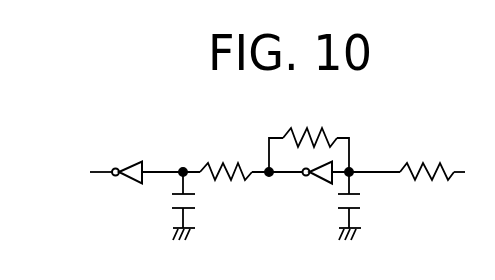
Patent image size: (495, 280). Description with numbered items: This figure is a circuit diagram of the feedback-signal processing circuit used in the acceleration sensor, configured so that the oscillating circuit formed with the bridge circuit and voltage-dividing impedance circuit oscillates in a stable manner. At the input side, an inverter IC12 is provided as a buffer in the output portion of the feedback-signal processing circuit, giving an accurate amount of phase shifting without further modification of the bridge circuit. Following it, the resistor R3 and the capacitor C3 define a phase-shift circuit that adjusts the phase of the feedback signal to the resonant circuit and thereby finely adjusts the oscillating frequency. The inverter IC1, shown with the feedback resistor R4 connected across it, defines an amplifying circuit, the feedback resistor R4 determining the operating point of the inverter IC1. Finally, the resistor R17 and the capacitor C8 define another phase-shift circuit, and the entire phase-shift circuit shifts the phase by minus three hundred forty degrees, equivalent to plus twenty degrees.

The inverter IC12 is at (136, 157).
The resistor R3 is at (226, 155).
The capacitor C3 is at (197, 206).
The feedback resistor R4 is at (310, 122).
The inverter IC1 is at (312, 186).
The capacitor C8 is at (365, 206).
The resistor R17 is at (427, 155).